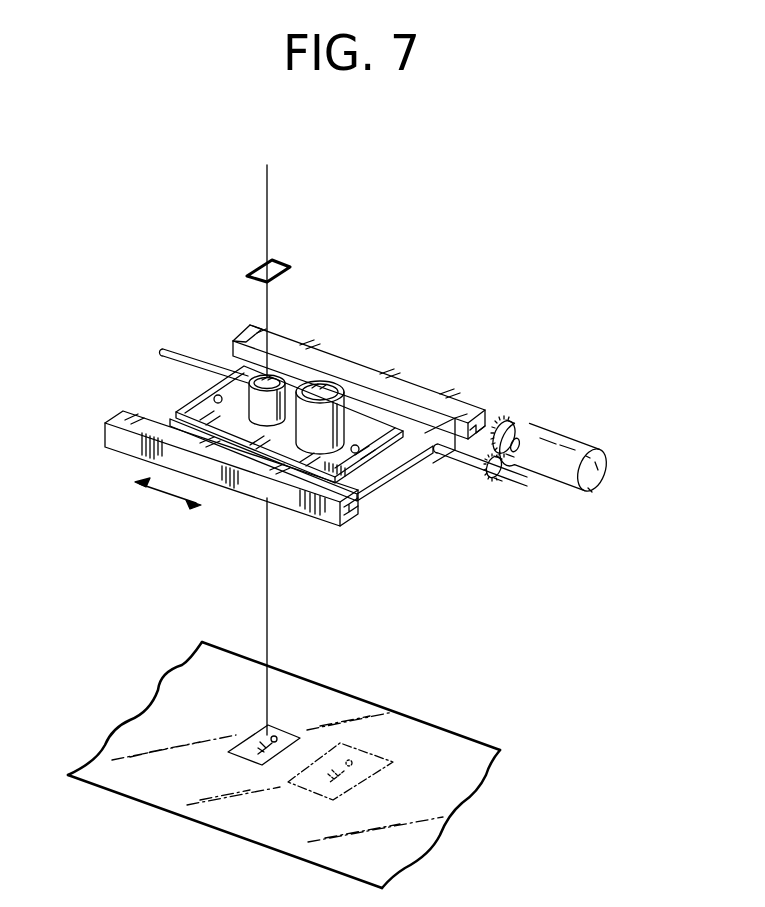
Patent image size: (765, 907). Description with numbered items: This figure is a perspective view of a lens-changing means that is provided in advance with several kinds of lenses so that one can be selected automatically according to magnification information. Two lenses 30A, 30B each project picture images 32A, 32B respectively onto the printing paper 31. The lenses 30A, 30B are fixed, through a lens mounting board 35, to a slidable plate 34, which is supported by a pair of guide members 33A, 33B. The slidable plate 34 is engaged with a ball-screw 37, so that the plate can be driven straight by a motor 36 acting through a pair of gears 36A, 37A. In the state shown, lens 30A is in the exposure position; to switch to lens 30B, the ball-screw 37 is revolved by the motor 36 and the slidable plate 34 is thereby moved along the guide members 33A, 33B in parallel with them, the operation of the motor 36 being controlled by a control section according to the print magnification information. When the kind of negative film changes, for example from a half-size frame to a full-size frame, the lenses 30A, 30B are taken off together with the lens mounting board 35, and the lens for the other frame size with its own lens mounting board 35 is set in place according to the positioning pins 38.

The lens 30A is at (274, 382).
The lens 30B is at (331, 381).
The printing paper 31 is at (425, 727).
The picture image 32A is at (252, 738).
The picture image 32B is at (377, 763).
The guide member 33A is at (113, 438).
The guide member 33B is at (245, 333).
The slidable plate 34 is at (407, 412).
The lens mounting board 35 is at (348, 466).
The motor 36 is at (563, 436).
The gear 36A is at (507, 420).
The ball-screw 37 is at (466, 464).
The gear 37A is at (492, 480).
The positioning pins 38 is at (213, 397).